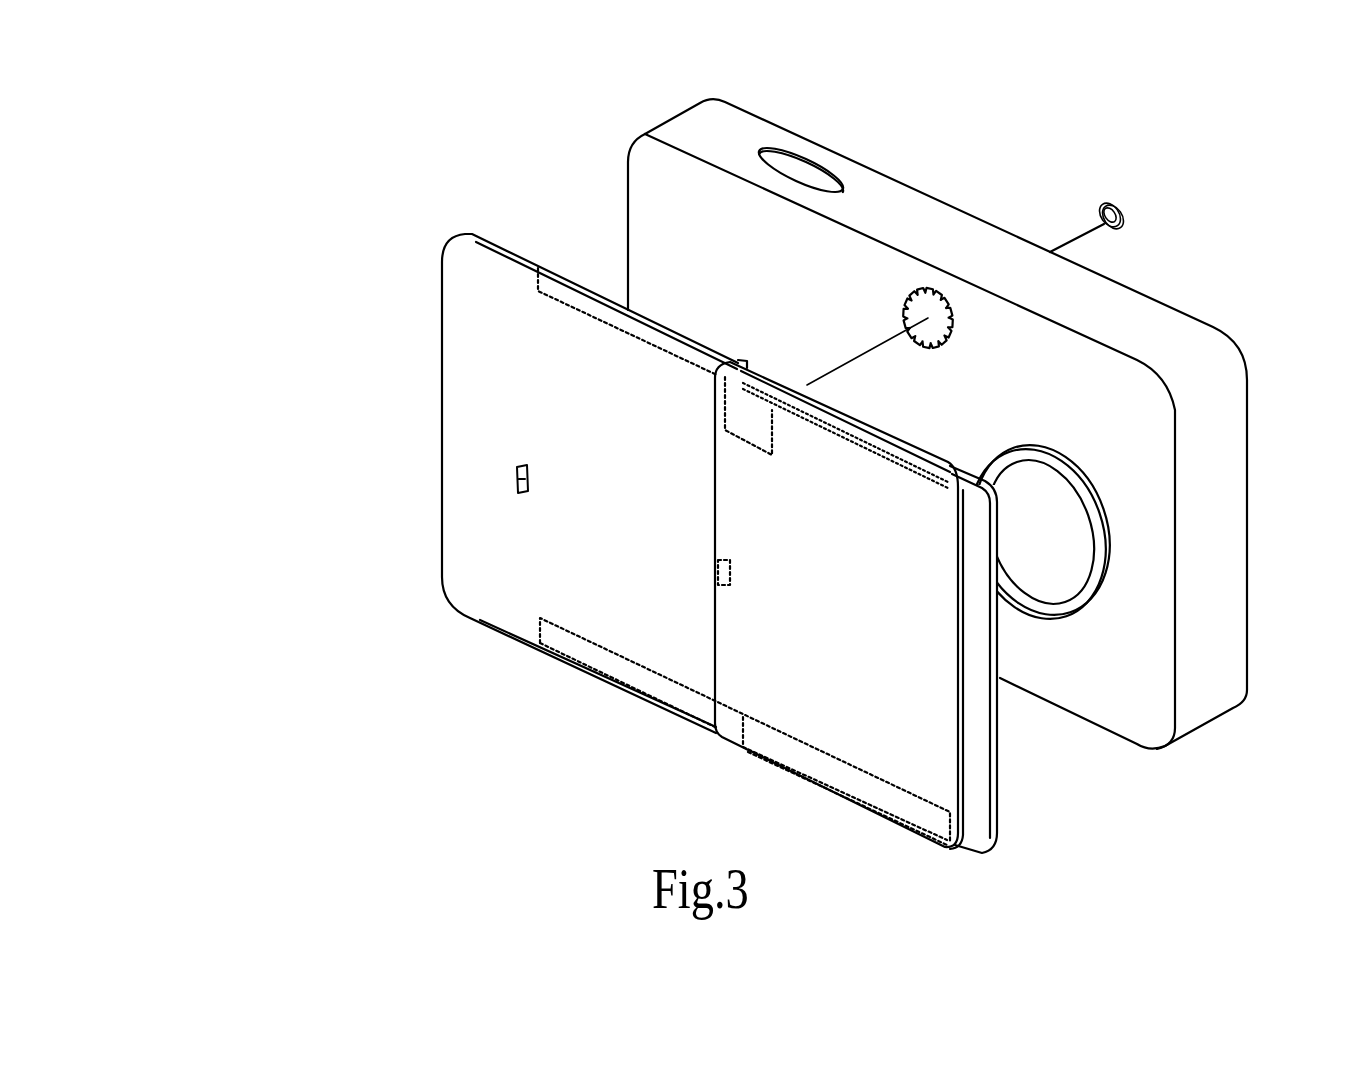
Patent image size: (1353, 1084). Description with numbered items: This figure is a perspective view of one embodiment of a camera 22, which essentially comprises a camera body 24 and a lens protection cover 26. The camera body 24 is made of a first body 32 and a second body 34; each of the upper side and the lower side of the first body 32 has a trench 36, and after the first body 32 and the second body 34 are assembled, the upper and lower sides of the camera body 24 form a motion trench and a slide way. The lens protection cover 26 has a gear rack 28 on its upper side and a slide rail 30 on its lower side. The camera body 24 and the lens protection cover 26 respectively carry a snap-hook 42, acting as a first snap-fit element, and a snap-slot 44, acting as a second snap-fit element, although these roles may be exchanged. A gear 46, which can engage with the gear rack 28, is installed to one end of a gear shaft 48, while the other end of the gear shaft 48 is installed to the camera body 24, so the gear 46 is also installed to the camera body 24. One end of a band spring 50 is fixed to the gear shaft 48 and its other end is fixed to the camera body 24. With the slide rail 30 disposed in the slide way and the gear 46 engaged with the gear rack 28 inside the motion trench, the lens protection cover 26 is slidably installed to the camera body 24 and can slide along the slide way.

The camera 22 is at (273, 645).
The camera body 24 is at (1118, 823).
The lens protection cover 26 is at (873, 657).
The gear rack 28 is at (877, 440).
The slide rail 30 is at (843, 774).
The first body 32 is at (442, 290).
The second body 34 is at (877, 168).
The trench 36 is at (575, 300).
The snap-hook 42 is at (515, 478).
The snap-slot 44 is at (718, 570).
The gear 46 is at (915, 312).
The gear shaft 48 is at (1107, 207).
The band spring 50 is at (1120, 223).